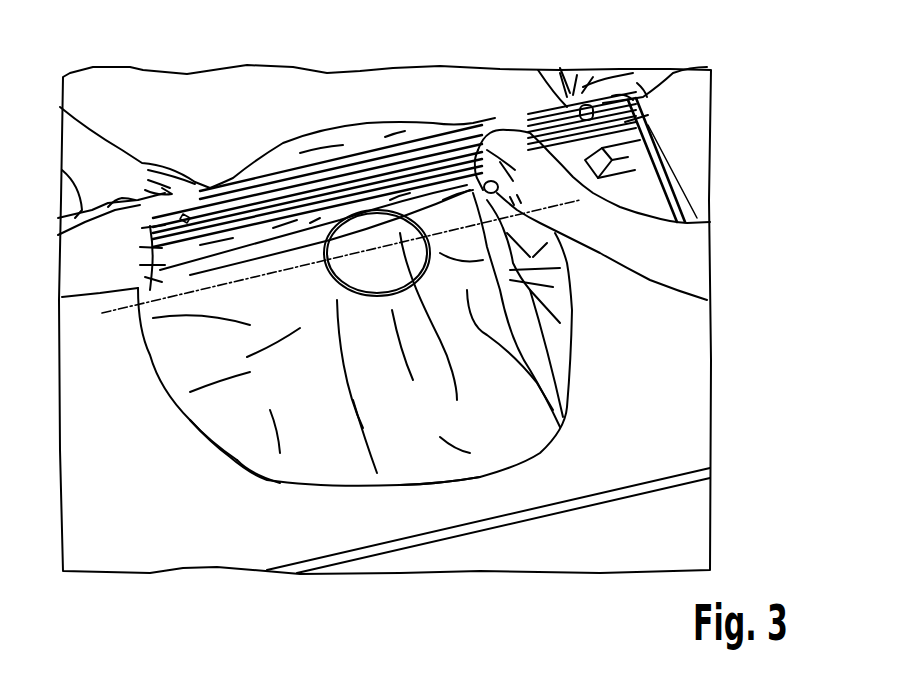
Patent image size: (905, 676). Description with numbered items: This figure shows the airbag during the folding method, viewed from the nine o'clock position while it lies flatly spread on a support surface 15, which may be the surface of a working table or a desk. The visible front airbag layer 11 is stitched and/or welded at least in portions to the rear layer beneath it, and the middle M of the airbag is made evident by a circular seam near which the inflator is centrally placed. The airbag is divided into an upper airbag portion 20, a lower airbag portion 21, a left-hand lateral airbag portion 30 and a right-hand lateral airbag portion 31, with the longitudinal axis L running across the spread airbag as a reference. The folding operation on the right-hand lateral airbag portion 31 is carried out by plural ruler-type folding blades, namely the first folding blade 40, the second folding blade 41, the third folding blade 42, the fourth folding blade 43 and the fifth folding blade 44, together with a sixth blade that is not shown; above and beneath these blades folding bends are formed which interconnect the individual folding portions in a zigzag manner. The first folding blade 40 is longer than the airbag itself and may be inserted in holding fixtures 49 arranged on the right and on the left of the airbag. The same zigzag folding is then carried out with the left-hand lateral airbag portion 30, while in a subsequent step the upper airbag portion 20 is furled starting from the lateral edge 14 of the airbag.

The right-hand lateral airbag portion 31 is at (357, 123).
The fifth folding blade 44 is at (523, 117).
The fourth folding blade 43 is at (537, 107).
The third folding blade 42 is at (633, 110).
The second folding blade 41 is at (640, 127).
The first folding blade 40 is at (635, 128).
The holding fixture 49 is at (628, 165).
The longitudinal axis L is at (102, 316).
The lower airbag portion 21 is at (563, 303).
The middle of the airbag M is at (367, 296).
The upper airbag portion 20 is at (180, 365).
The support surface 15 is at (680, 447).
The front airbag layer 11 is at (237, 447).
The lateral edge 14 is at (267, 478).
The left-hand lateral airbag portion 30 is at (480, 477).